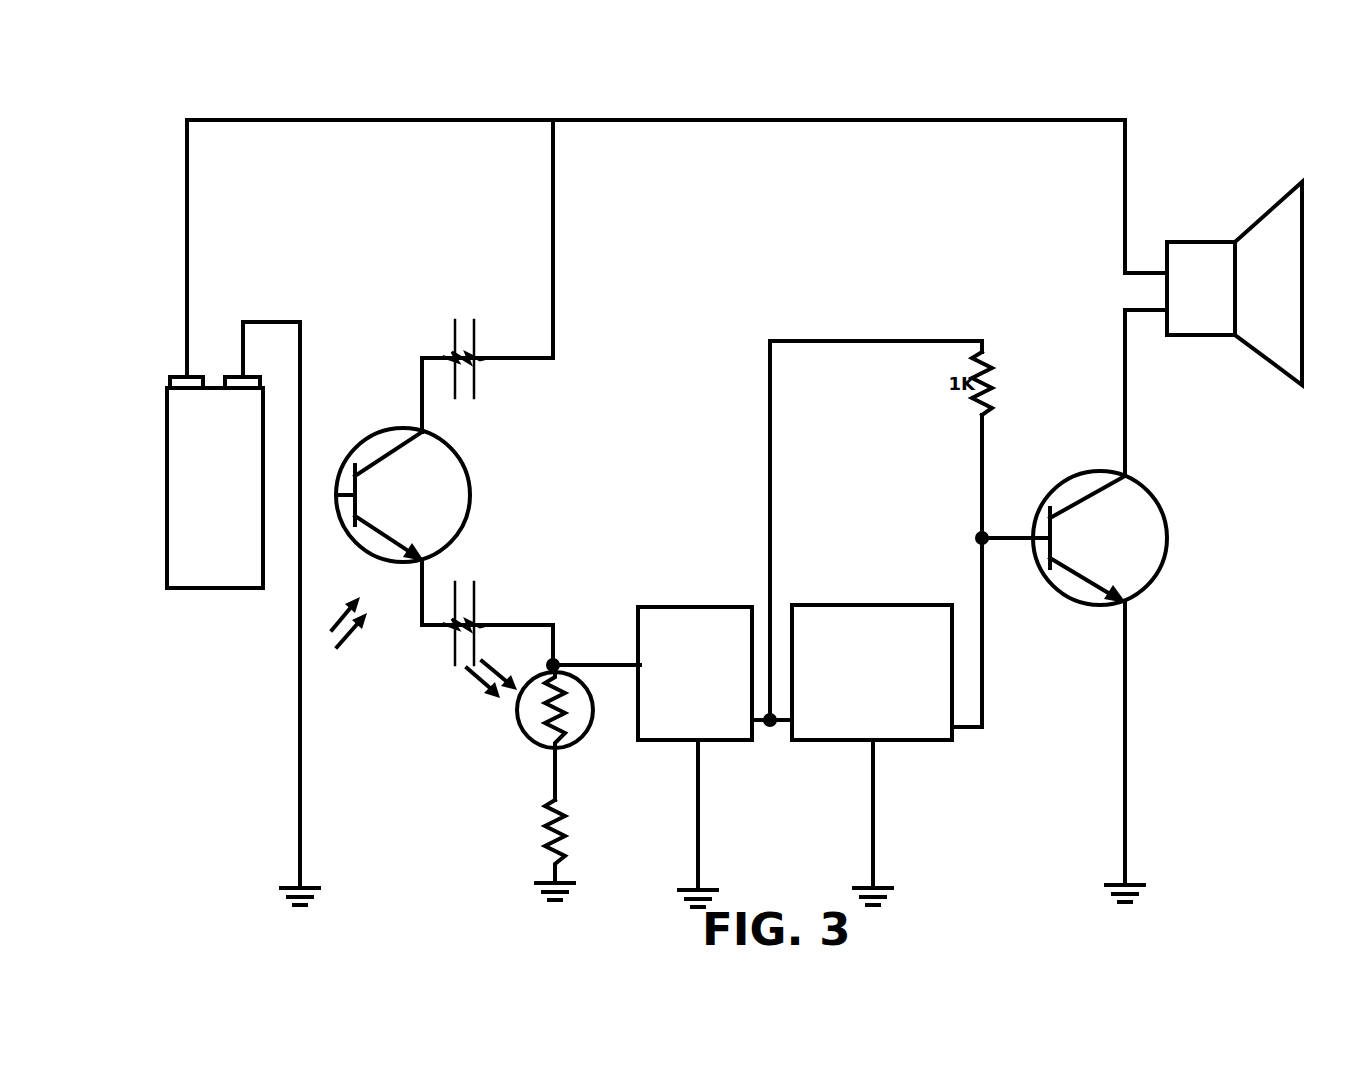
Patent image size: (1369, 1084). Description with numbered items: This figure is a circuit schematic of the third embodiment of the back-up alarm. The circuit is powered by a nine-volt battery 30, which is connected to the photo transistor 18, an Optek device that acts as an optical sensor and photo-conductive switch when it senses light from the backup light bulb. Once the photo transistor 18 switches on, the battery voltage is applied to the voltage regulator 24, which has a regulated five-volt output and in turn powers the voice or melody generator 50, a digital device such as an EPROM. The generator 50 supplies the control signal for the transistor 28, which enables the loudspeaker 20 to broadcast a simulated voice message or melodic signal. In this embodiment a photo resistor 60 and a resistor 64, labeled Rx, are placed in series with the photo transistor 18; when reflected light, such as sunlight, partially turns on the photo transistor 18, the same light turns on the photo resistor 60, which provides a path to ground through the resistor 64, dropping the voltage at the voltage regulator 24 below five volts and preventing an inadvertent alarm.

The photo transistor 18 is at (363, 447).
The loudspeaker 20 is at (1205, 335).
The voltage regulator 24 is at (677, 607).
The transistor 28 is at (1148, 588).
The 9-volt battery 30 is at (205, 590).
The voice or melody generator 50 is at (905, 652).
The photo resistor 60 is at (593, 720).
The resistor 64 is at (543, 823).